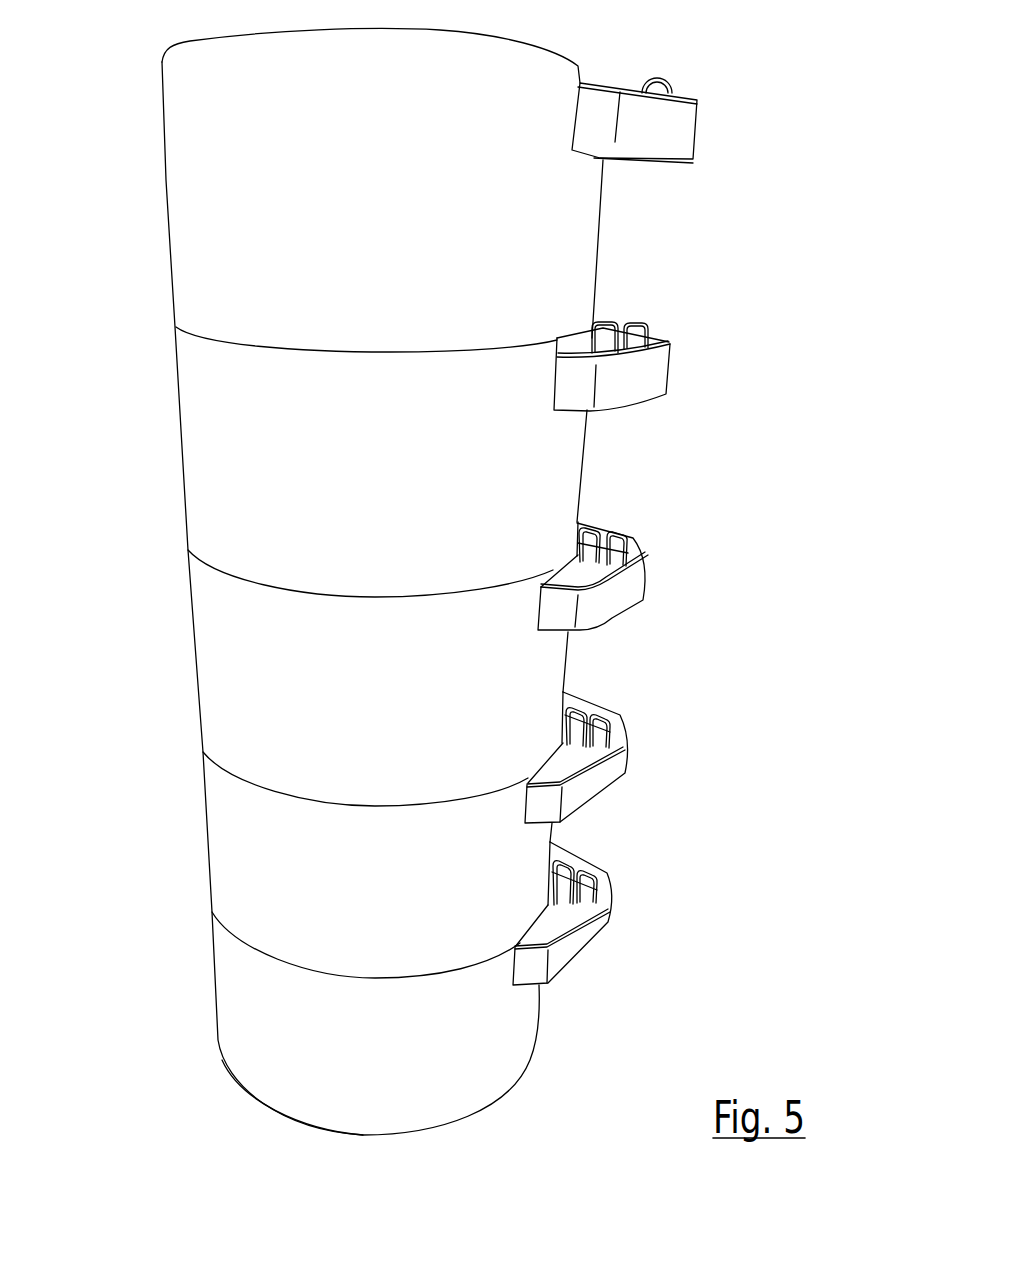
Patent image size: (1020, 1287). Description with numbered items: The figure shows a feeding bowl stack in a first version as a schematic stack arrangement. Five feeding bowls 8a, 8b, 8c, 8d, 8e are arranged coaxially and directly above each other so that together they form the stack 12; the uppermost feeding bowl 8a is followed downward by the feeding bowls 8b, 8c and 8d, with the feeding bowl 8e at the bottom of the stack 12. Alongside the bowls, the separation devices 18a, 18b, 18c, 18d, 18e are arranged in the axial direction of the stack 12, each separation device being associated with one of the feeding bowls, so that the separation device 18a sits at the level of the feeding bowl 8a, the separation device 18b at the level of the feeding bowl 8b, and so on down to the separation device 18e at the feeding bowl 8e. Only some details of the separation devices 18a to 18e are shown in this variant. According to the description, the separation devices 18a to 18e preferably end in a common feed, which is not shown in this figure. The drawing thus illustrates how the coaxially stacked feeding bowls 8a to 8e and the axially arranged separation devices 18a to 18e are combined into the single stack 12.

The stack 12 is at (644, 498).
The feeding bowl 8a is at (187, 201).
The feeding bowl 8b is at (200, 452).
The feeding bowl 8c is at (200, 640).
The feeding bowl 8d is at (210, 845).
The feeding bowl 8e is at (222, 993).
The separation device 18a is at (690, 125).
The separation device 18b is at (660, 370).
The separation device 18c is at (638, 577).
The separation device 18d is at (615, 757).
The separation device 18e is at (605, 905).